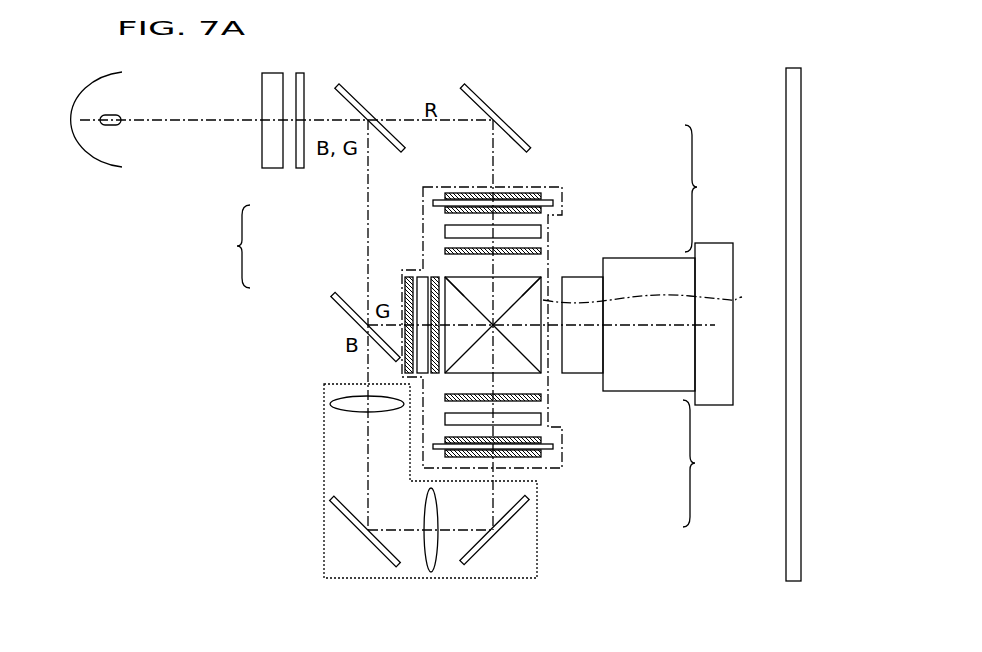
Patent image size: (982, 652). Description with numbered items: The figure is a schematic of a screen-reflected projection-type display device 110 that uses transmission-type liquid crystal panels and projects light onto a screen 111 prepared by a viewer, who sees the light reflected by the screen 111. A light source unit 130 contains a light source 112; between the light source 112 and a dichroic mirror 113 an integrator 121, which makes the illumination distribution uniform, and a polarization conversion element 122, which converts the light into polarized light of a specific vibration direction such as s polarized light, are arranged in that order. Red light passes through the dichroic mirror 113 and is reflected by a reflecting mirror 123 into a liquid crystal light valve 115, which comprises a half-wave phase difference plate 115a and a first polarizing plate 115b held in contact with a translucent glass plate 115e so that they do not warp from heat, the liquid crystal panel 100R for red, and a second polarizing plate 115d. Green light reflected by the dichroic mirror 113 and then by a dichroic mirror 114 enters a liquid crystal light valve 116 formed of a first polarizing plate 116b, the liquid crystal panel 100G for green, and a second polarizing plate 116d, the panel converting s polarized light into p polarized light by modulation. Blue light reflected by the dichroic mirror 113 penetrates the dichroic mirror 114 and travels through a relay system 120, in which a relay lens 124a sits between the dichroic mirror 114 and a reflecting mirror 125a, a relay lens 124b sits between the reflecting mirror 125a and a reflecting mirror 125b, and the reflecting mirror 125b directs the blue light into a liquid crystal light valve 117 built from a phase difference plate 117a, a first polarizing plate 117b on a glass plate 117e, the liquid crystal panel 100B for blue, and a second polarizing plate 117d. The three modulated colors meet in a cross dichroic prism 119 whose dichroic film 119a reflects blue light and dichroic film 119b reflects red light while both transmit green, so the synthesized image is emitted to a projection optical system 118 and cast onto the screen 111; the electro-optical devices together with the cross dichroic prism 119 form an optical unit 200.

The projection-type display device 110 is at (586, 71).
The screen 111 is at (792, 68).
The light source 112 is at (77, 92).
The dichroic mirror 113 is at (356, 100).
The dichroic mirror 114 is at (351, 314).
The liquid crystal light valve 115 is at (585, 189).
The λ/2 phase difference plate 115a is at (541, 195).
The first polarizing plate 115b is at (545, 211).
The second polarizing plate 115d is at (541, 251).
The glass plate 115e is at (553, 203).
The liquid crystal light valve 116 is at (319, 289).
The first polarizing plate 116b is at (409, 278).
The second polarizing plate 116d is at (435, 278).
The liquid crystal light valve 117 is at (585, 460).
The λ/2 phase difference plate 117a is at (541, 454).
The first polarizing plate 117b is at (545, 440).
The second polarizing plate 117d is at (541, 398).
The glass plate 117e is at (553, 447).
The projection optical system 118 is at (712, 405).
The cross dichroic prism 119 is at (537, 345).
The dichroic film 119a is at (533, 292).
The dichroic film 119b is at (452, 280).
The relay system 120 is at (434, 507).
The integrator 121 is at (268, 145).
The polarization conversion element 122 is at (300, 74).
The reflecting mirror 123 is at (480, 100).
The relay lens 124a is at (338, 404).
The relay lens 124b is at (428, 566).
The reflecting mirror 125a is at (376, 548).
The reflecting mirror 125b is at (510, 521).
The light source unit 130 is at (93, 192).
The optical unit 200 is at (663, 298).
The liquid crystal panel for red 100R is at (541, 232).
The liquid crystal panel for green 100G is at (422, 278).
The liquid crystal panel for blue 100B is at (541, 419).